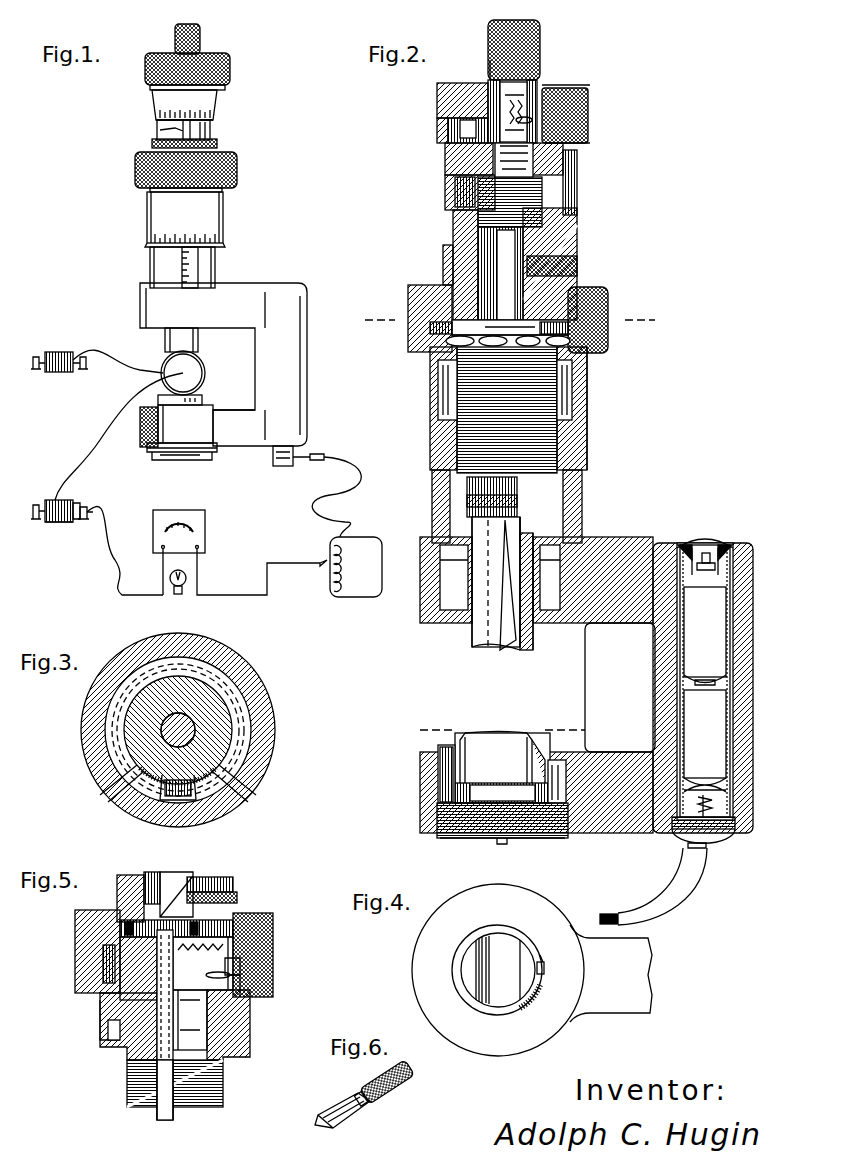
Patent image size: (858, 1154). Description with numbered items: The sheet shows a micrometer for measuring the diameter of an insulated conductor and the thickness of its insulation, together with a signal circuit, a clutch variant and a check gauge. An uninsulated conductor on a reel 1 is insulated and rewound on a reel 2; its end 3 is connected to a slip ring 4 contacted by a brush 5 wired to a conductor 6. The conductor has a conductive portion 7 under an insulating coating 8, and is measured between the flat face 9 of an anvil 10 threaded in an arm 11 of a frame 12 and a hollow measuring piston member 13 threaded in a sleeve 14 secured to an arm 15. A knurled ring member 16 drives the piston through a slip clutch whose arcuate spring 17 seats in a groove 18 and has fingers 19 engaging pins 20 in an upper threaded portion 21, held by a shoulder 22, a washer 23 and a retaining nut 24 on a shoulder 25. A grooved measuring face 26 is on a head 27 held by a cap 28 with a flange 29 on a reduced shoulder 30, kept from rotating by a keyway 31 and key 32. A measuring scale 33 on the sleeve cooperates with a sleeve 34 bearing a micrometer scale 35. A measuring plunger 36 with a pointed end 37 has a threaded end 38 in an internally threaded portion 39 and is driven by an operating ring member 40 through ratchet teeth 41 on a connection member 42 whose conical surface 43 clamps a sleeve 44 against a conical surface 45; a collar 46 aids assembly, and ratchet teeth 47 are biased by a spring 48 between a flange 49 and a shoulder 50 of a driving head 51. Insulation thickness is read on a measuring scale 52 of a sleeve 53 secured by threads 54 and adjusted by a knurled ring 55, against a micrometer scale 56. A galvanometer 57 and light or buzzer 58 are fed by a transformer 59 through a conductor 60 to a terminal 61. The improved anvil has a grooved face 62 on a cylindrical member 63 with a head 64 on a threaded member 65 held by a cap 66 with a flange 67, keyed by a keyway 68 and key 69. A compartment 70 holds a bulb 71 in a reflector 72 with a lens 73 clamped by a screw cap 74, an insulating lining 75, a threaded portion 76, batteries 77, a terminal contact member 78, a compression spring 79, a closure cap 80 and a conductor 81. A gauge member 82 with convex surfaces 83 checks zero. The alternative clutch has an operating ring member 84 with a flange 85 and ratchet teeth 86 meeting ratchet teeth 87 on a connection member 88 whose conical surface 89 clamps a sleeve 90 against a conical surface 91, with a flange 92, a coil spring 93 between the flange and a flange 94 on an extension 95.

In FIG. 1, the reel 1 is at (52, 348).
In FIG. 1, the reel 2 is at (50, 497).
In FIG. 1, the end of the insulated conductor 3 is at (62, 522).
In FIG. 2, the end of the insulated conductor 3 is at (645, 310).
In FIG. 1, the slip ring 4 is at (80, 508).
In FIG. 2, the slip ring 4 is at (570, 720).
In FIG. 1, the brush 5 is at (76, 497).
In FIG. 1, the electrical conductor 6 is at (123, 560).
In FIG. 1, the electrically conductive material portion 7 is at (202, 373).
In FIG. 1, the insulating material 8 is at (200, 361).
In FIG. 1, the flat face of anvil 9 is at (202, 397).
In FIG. 1, the anvil 10 is at (175, 420).
In FIG. 1, the frame arm 11 is at (248, 445).
In FIG. 2, the frame arm 11 is at (640, 826).
In FIG. 4, the frame arm 11 is at (622, 1005).
In FIG. 1, the frame 12 is at (307, 368).
In FIG. 2, the frame 12 is at (752, 662).
In FIG. 1, the hollow measuring piston member 13 is at (165, 342).
In FIG. 2, the hollow measuring piston member 13 is at (472, 633).
In FIG. 1, the sleeve 14 is at (150, 272).
In FIG. 2, the sleeve 14 is at (582, 490).
In FIG. 1, the frame arm 15 is at (246, 291).
In FIG. 2, the frame arm 15 is at (633, 620).
In FIG. 1, the knurled ring member 16 is at (135, 170).
In FIG. 3, the knurled ring member 16 is at (262, 783).
In FIG. 2, the arcuate spring 17 is at (410, 328).
In FIG. 3, the arcuate spring 17 is at (255, 718).
In FIG. 2, the spring seating groove 18 is at (608, 336).
In FIG. 3, the spring seating groove 18 is at (252, 748).
In FIG. 3, the finger 19 is at (176, 812).
In FIG. 2, the pins 20 is at (495, 325).
In FIG. 3, the pins 20 is at (212, 808).
In FIG. 2, the upper threaded portion 21 is at (457, 390).
In FIG. 3, the upper threaded portion 21 is at (130, 770).
In FIG. 5, the upper threaded portion 21 is at (222, 1082).
In FIG. 2, the shoulder 22 is at (577, 290).
In FIG. 2, the washer 23 is at (530, 325).
In FIG. 2, the retaining nut 24 is at (587, 365).
In FIG. 2, the shoulder 25 is at (587, 385).
In FIG. 2, the cylindrically grooved measuring face 26 is at (490, 645).
In FIG. 2, the head 27 is at (490, 530).
In FIG. 2, the cap 28 is at (470, 503).
In FIG. 2, the flange 29 is at (540, 525).
In FIG. 2, the reduced diameter shoulder 30 is at (470, 487).
In FIG. 2, the keyway 31 is at (535, 648).
In FIG. 2, the key 32 is at (540, 628).
In FIG. 1, the measuring scale 33 is at (183, 268).
In FIG. 1, the sleeve 34 is at (148, 215).
In FIG. 2, the sleeve 34 is at (588, 432).
In FIG. 1, the micrometer scale 35 is at (224, 243).
In FIG. 2, the measuring plunger 36 is at (500, 273).
In FIG. 3, the measuring plunger 36 is at (195, 722).
In FIG. 5, the measuring plunger 36 is at (168, 1112).
In FIG. 2, the pointed conical end 37 is at (512, 645).
In FIG. 2, the upper threaded end 38 is at (546, 198).
In FIG. 2, the internally threaded portion 39 is at (456, 240).
In FIG. 1, the operating ring member 40 is at (228, 72).
In FIG. 2, the operating ring member 40 is at (590, 127).
In FIG. 2, the ratchet teeth 41 is at (582, 106).
In FIG. 2, the connection member 42 is at (485, 132).
In FIG. 2, the conical surface 43 is at (450, 157).
In FIG. 1, the sleeve 44 is at (155, 99).
In FIG. 2, the sleeve 44 is at (445, 184).
In FIG. 2, the conical surface 45 is at (577, 160).
In FIG. 2, the collar 46 is at (470, 112).
In FIG. 2, the ratchet teeth 47 is at (488, 90).
In FIG. 2, the spring 48 is at (543, 82).
In FIG. 2, the flange 49 is at (572, 85).
In FIG. 2, the shoulder 50 is at (490, 60).
In FIG. 1, the positive driving head 51 is at (200, 42).
In FIG. 2, the positive driving head 51 is at (540, 42).
In FIG. 1, the measuring scale 52 is at (160, 128).
In FIG. 1, the sleeve 53 is at (212, 128).
In FIG. 2, the sleeve 53 is at (453, 254).
In FIG. 5, the sleeve 53 is at (232, 878).
In FIG. 2, the screw-threaded engagement 54 is at (570, 220).
In FIG. 1, the knurled ring 55 is at (215, 143).
In FIG. 2, the knurled ring 55 is at (573, 262).
In FIG. 5, the knurled ring 55 is at (240, 893).
In FIG. 1, the micrometer scale 56 is at (215, 109).
In FIG. 1, the galvanometer 57 is at (205, 530).
In FIG. 1, the electric light or buzzer 58 is at (170, 577).
In FIG. 1, the stepdown transformer 59 is at (356, 567).
In FIG. 1, the electrical conductor 60 is at (325, 510).
In FIG. 1, the terminal 61 is at (280, 466).
In FIG. 2, the cylindrically grooved measuring face 62 is at (498, 733).
In FIG. 4, the cylindrically grooved measuring face 62 is at (494, 936).
In FIG. 2, the cylindrical member 63 is at (496, 760).
In FIG. 4, the cylindrical member 63 is at (456, 960).
In FIG. 2, the head 64 is at (512, 790).
In FIG. 2, the threaded member 65 is at (445, 835).
In FIG. 2, the cap 66 is at (437, 785).
In FIG. 2, the flange 67 is at (437, 757).
In FIG. 2, the keyway 68 is at (552, 748).
In FIG. 4, the keyway 68 is at (545, 960).
In FIG. 2, the key 69 is at (542, 738).
In FIG. 4, the key 69 is at (544, 968).
In FIG. 2, the compartment 70 is at (727, 645).
In FIG. 2, the flashlight electric bulb 71 is at (706, 548).
In FIG. 2, the reflector 72 is at (690, 545).
In FIG. 2, the lens 73 is at (701, 528).
In FIG. 2, the screw cap 74 is at (728, 548).
In FIG. 2, the insulating lining 75 is at (725, 608).
In FIG. 2, the threaded portion 76 is at (735, 830).
In FIG. 2, the electric batteries 77 is at (670, 680).
In FIG. 2, the terminal contact member 78 is at (703, 790).
In FIG. 2, the compression spring 79 is at (685, 830).
In FIG. 2, the closure cap 80 is at (690, 848).
In FIG. 2, the conductor 81 is at (690, 895).
In FIG. 6, the gauge member 82 is at (384, 1086).
In FIG. 6, the convex curved surfaces 83 is at (318, 1097).
In FIG. 5, the measuring piston operating ring member 84 is at (273, 945).
In FIG. 5, the flange 85 is at (120, 922).
In FIG. 5, the ratchet teeth 86 is at (100, 933).
In FIG. 5, the ratchet teeth 87 is at (103, 960).
In FIG. 5, the connection member 88 is at (240, 965).
In FIG. 5, the conical surface 89 is at (110, 1003).
In FIG. 5, the sleeve 90 is at (118, 1030).
In FIG. 5, the conical surface 91 is at (110, 1018).
In FIG. 5, the flange 92 is at (250, 985).
In FIG. 5, the compression coil spring 93 is at (200, 936).
In FIG. 5, the flange 94 is at (158, 878).
In FIG. 5, the extension 95 is at (130, 878).